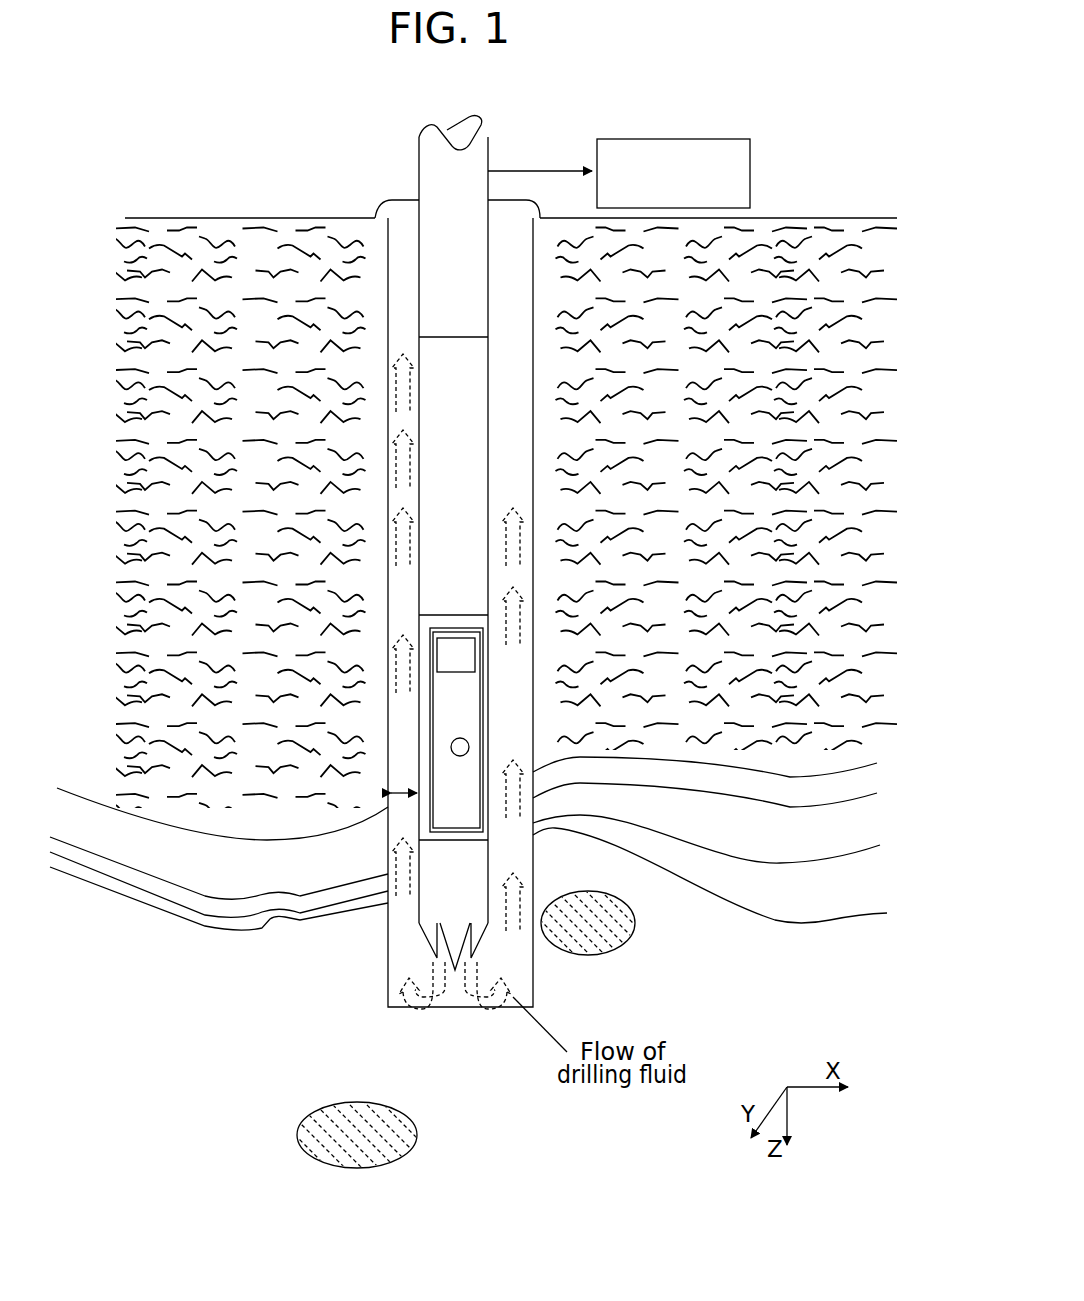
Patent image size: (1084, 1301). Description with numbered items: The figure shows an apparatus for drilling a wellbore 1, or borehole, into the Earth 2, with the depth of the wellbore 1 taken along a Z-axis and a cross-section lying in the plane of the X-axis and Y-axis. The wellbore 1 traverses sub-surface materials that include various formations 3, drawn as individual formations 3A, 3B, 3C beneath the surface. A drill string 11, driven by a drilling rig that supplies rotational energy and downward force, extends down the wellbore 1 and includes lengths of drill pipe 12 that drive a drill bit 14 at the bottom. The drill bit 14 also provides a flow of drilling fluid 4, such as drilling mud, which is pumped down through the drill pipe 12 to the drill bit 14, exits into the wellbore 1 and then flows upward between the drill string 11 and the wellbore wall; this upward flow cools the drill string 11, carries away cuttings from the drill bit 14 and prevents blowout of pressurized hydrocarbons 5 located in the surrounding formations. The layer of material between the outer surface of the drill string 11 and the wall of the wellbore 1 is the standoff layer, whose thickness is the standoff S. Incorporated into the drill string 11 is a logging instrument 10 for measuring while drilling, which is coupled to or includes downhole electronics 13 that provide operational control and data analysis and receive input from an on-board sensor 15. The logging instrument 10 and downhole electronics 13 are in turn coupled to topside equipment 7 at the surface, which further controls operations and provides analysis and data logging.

The wellbore 1 is at (388, 985).
The Earth 2 is at (197, 245).
The formations 3 is at (860, 881).
The formation 3A is at (721, 769).
The formation 3B is at (720, 804).
The formation 3C is at (721, 852).
The drilling fluid 4 is at (405, 225).
The pressurized hydrocarbons 5 is at (605, 943).
The topside equipment 7 is at (695, 140).
The logging instrument 10 is at (449, 803).
The drill string 11 is at (420, 162).
The drill pipe 12 is at (472, 170).
The downhole electronics 13 is at (443, 664).
The drill bit 14 is at (432, 942).
The sensor 15 is at (468, 741).
The standoff S is at (388, 780).